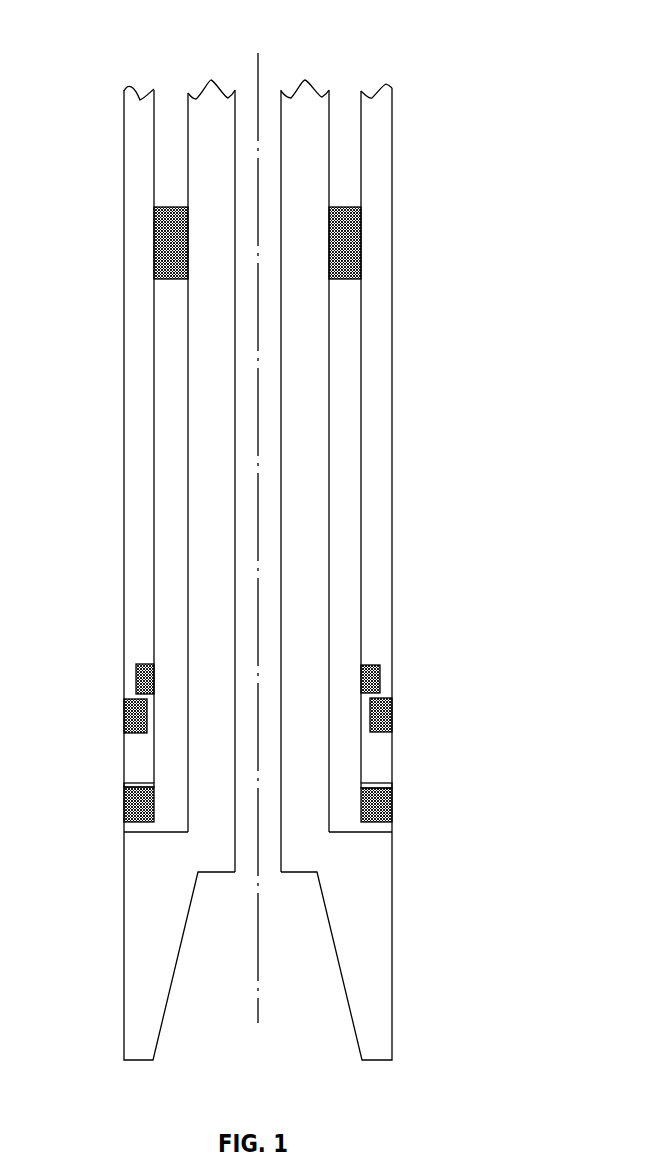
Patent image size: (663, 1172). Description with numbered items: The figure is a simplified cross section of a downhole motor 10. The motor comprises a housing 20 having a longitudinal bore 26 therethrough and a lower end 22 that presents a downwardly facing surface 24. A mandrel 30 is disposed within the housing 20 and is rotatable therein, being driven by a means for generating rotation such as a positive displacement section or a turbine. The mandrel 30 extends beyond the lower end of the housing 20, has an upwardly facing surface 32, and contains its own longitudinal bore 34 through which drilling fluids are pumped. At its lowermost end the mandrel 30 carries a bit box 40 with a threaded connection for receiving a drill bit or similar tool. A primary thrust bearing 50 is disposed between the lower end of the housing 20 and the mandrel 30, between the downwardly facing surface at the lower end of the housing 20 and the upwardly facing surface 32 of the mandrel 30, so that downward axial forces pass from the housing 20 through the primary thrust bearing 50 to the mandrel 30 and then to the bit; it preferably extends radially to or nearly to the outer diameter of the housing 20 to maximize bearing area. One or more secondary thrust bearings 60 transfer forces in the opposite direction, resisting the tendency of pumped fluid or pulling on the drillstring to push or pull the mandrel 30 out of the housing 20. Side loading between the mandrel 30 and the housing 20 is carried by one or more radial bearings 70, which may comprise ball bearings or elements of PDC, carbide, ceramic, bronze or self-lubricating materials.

The downhole motor 10 is at (294, 530).
The housing 20 is at (318, 458).
The lower end 22 is at (265, 726).
The downwardly facing surface 24 is at (415, 820).
The longitudinal bore 26 is at (400, 56).
The mandrel 30 is at (350, 476).
The upwardly facing surface 32 is at (221, 860).
The longitudinal bore 34 is at (299, 511).
The bit box 40 is at (378, 927).
The primary thrust bearing 50 is at (102, 819).
The secondary thrust bearing 60 is at (331, 680).
The radial bearing 70 is at (324, 234).